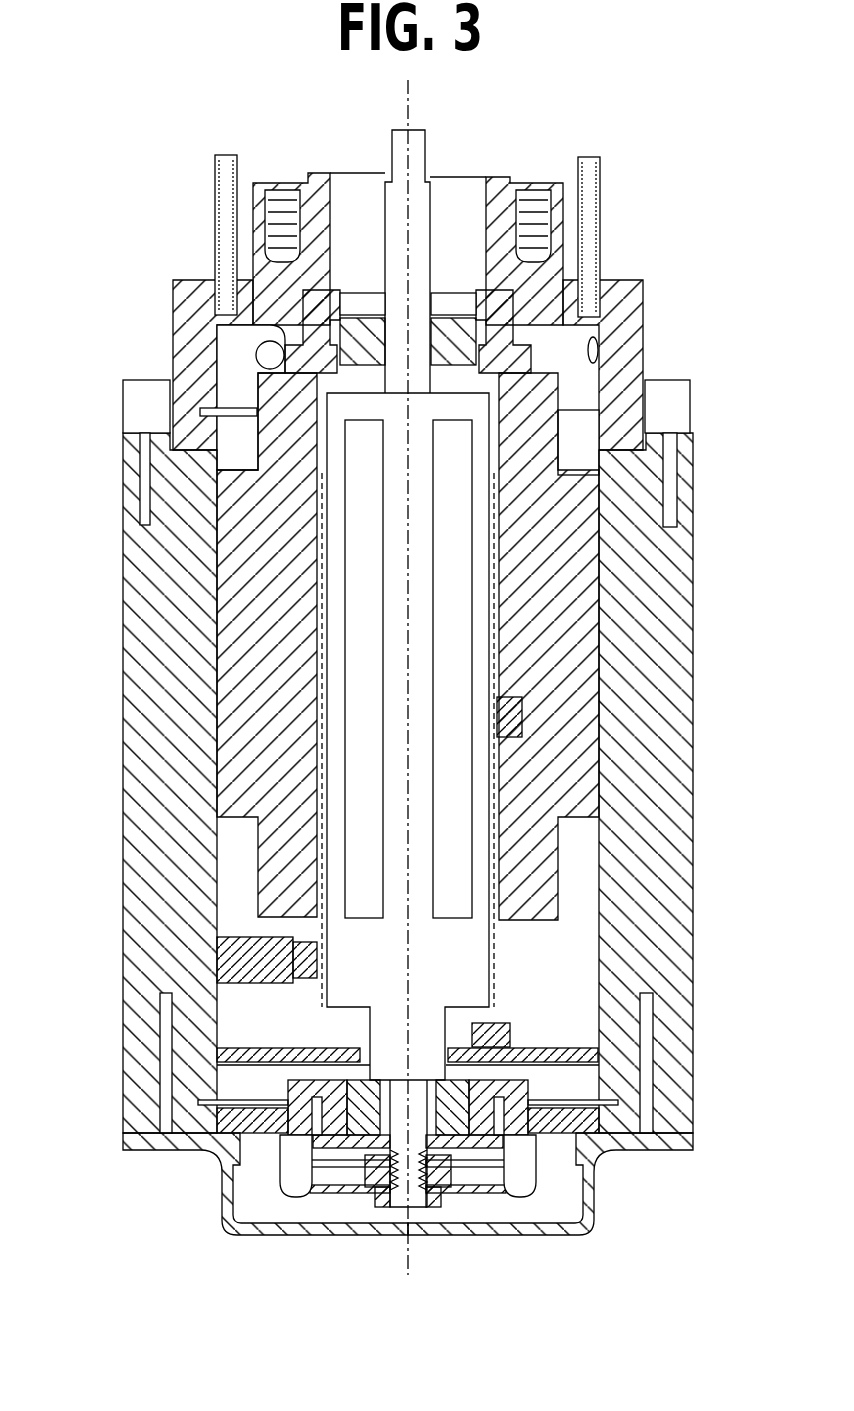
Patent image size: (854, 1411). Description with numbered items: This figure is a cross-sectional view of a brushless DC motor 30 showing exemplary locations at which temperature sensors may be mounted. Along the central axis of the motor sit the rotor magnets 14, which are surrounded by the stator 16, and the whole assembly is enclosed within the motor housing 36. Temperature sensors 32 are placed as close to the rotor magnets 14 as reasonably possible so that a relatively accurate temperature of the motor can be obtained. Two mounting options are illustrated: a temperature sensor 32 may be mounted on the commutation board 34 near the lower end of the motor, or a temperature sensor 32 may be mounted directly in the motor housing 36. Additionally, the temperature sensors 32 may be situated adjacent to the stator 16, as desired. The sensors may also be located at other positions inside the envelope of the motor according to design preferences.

The brushless DC motor 30 is at (679, 133).
The rotor magnets 14 is at (373, 447).
The stator 16 is at (283, 627).
The temperature sensors 32 is at (505, 737).
The commutation board 34 is at (563, 1047).
The motor housing 36 is at (243, 953).